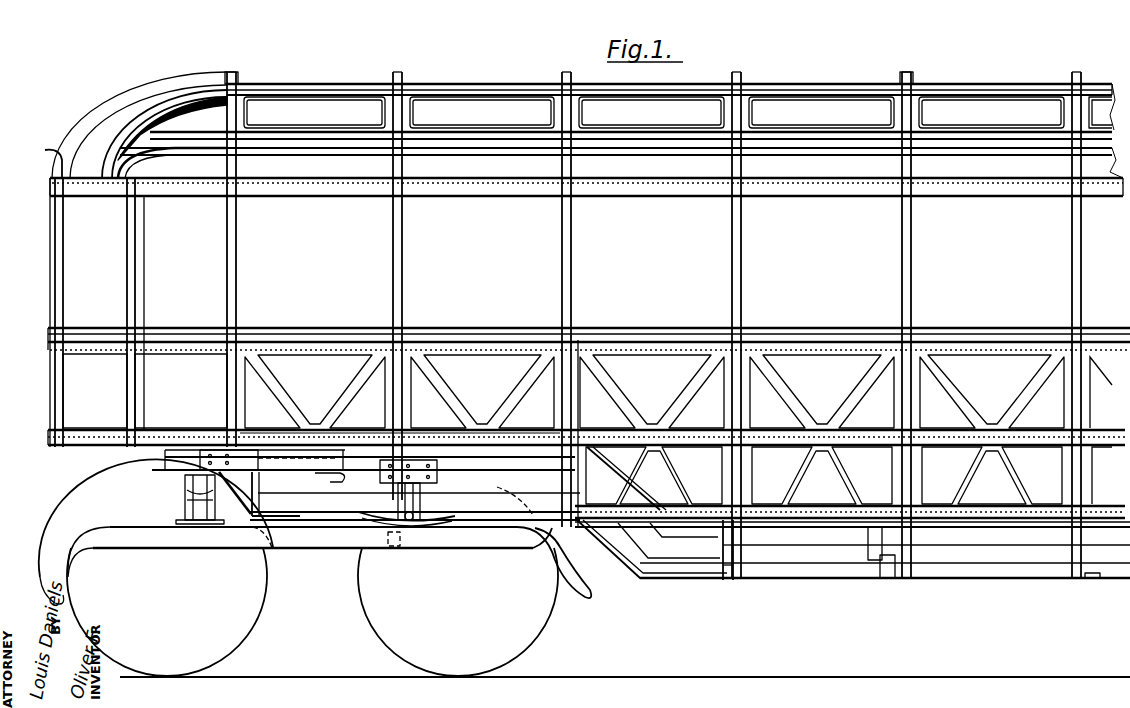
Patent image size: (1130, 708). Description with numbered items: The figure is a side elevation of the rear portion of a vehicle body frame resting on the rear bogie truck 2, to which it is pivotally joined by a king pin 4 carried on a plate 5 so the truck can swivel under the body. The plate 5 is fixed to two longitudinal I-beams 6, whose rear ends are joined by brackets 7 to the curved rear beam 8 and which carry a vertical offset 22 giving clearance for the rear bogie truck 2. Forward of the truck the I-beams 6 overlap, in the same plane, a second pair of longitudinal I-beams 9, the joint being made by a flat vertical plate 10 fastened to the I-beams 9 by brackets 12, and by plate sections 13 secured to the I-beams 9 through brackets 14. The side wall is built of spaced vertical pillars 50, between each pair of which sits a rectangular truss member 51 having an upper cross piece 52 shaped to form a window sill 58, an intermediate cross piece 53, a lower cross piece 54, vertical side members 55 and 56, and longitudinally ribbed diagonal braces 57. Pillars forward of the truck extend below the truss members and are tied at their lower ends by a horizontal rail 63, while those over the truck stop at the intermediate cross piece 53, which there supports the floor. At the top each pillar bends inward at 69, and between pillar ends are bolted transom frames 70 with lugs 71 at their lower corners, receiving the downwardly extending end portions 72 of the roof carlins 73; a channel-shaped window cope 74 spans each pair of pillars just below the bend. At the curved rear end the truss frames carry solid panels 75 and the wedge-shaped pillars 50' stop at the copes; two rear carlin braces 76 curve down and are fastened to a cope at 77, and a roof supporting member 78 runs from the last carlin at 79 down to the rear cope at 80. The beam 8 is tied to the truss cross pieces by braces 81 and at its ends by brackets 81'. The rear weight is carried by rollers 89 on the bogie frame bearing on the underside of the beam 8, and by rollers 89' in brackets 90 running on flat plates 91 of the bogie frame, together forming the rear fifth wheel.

The rear bogie truck 2 is at (312, 549).
The king pin 4 is at (415, 540).
The plate 5 is at (445, 516).
The longitudinal I-beams 6 is at (303, 505).
The brackets 7 is at (256, 490).
The curved rear beam 8 is at (165, 452).
The longitudinal I-beams 9 is at (1000, 545).
The flat vertical plate 10 is at (893, 560).
The brackets 12 is at (868, 542).
The plate sections 13 is at (722, 550).
The brackets 14 is at (727, 580).
The vertical offset 22 is at (626, 560).
The vertical pillars 50 is at (654, 312).
The pillars 50' is at (97, 312).
The rectangular truss member 51 is at (706, 391).
The upper horizontal cross piece 52 is at (478, 340).
The intermediate horizontal cross piece 53 is at (452, 425).
The lower horizontal cross piece 54 is at (805, 500).
The vertical side member 55 is at (760, 380).
The vertical side member 56 is at (893, 374).
The diagonal braces 57 is at (820, 450).
The window sill 58 is at (800, 340).
The horizontal rail 63 is at (1098, 580).
The bend 69 is at (898, 148).
The transom frame and carlin brace 70 is at (990, 83).
The laterally extending lug 71 is at (913, 150).
The downwardly extending end portions 72 is at (906, 106).
The roof carlins 73 is at (908, 72).
The window cope 74 is at (100, 196).
The solid panels 75 is at (145, 391).
The rear carlin braces 76 is at (190, 110).
The fastening of carlin braces 77 is at (125, 170).
The roof supporting member 78 is at (90, 105).
The securing point of roof supporting member 79 is at (232, 72).
The fastening of roof supporting member 80 is at (60, 160).
The braces 81 is at (586, 420).
The brackets 81' is at (400, 411).
The rollers 89 is at (174, 499).
The rollers 89' is at (396, 529).
The brackets 90 is at (440, 481).
The flat plates 91 is at (348, 530).